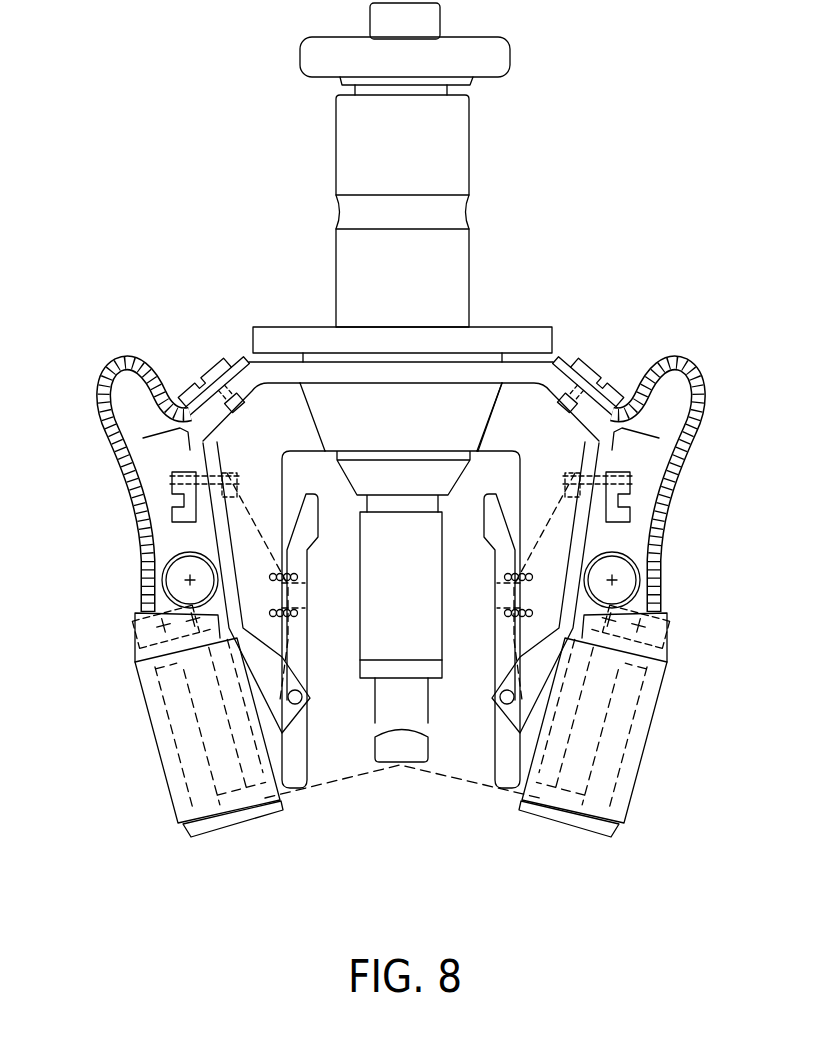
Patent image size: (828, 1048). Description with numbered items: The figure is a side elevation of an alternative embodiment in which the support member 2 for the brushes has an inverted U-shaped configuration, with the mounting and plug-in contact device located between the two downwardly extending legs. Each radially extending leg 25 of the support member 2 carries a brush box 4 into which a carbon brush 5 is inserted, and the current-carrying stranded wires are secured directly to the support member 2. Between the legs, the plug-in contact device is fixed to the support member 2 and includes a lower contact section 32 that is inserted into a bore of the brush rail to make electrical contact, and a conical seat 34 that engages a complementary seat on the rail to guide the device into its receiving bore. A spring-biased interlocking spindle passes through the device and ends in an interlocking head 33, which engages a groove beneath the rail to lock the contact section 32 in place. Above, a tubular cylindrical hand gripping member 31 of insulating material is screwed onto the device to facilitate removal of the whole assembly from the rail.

The support member 2 is at (547, 373).
The brush box 4 is at (165, 782).
The carbon brush 5 is at (227, 817).
The leg 25 is at (203, 463).
The hand gripping member 31 is at (355, 262).
The lower contact section 32 is at (422, 605).
The interlocking head 33 is at (395, 748).
The conical seat 34 is at (597, 383).